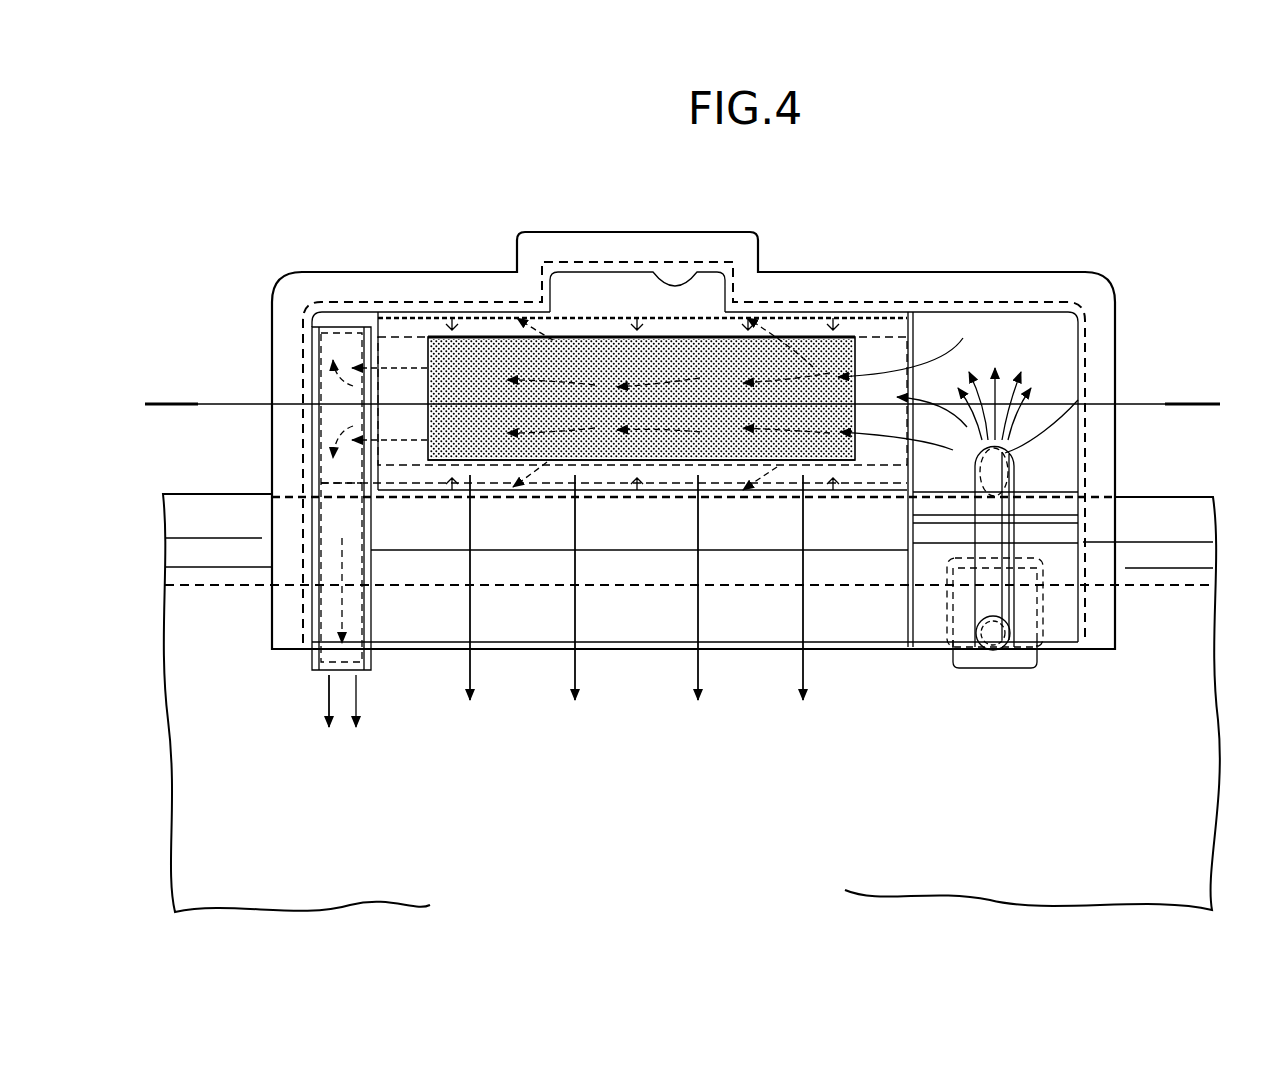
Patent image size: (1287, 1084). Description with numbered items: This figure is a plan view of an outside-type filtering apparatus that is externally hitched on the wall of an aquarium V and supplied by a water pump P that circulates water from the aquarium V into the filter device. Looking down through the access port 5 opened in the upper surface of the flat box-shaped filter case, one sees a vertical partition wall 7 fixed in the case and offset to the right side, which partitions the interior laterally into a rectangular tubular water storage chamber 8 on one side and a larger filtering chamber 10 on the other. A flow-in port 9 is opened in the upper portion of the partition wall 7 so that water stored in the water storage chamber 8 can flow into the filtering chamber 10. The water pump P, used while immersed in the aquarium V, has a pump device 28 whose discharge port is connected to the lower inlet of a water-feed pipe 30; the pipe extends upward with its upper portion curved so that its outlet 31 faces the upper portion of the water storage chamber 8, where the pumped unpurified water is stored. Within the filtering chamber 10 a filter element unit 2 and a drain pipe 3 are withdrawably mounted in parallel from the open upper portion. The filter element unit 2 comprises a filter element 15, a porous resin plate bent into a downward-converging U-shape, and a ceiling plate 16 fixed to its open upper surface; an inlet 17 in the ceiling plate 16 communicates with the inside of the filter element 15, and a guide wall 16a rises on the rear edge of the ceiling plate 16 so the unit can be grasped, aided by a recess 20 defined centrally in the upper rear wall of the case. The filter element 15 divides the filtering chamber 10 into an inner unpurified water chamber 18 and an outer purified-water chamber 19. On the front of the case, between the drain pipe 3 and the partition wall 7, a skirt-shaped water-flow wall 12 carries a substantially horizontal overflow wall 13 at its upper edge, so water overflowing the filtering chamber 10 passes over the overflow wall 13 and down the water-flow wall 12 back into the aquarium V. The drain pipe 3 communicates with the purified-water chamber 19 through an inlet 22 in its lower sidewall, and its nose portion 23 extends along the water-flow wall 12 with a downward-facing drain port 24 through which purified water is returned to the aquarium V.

The filter element unit 2 is at (815, 352).
The drain pipe 3 is at (310, 547).
The access port 5 is at (887, 353).
The partition wall 7 is at (908, 625).
The water storage chamber 8 is at (1040, 481).
The flow-in port 9 is at (913, 353).
The filtering chamber 10 is at (777, 330).
The water-flow wall 12 is at (603, 630).
The overflow wall 13 is at (683, 520).
The filter element 15 is at (480, 353).
The ceiling plate 16 is at (903, 417).
The guide wall 16a is at (563, 315).
The inlet 17 is at (815, 447).
The unpurified water chamber 18 is at (733, 376).
The purified-water chamber 19 is at (598, 473).
The recess 20 is at (698, 273).
The inlet 22 is at (385, 347).
The nose portion 23 is at (357, 558).
The drain port 24 is at (341, 670).
The pump device 28 is at (980, 662).
The water-feed pipe 30 is at (1002, 552).
The outlet 31 is at (1113, 370).
The water pump P is at (1013, 677).
The aquarium V is at (1213, 750).